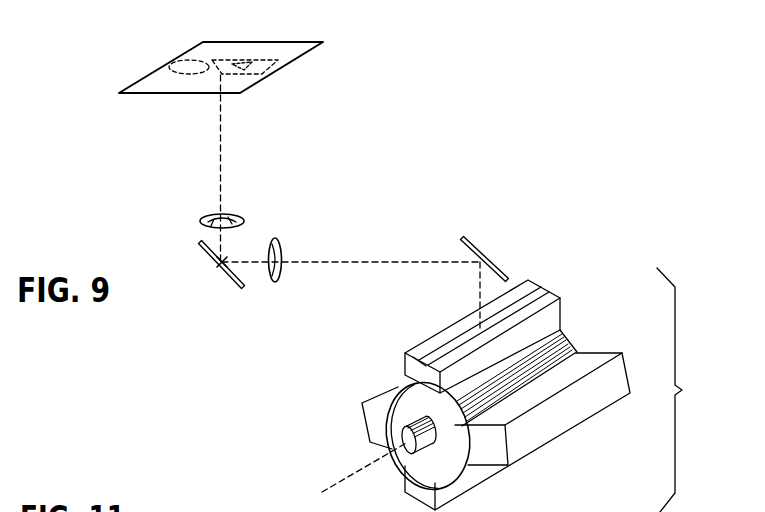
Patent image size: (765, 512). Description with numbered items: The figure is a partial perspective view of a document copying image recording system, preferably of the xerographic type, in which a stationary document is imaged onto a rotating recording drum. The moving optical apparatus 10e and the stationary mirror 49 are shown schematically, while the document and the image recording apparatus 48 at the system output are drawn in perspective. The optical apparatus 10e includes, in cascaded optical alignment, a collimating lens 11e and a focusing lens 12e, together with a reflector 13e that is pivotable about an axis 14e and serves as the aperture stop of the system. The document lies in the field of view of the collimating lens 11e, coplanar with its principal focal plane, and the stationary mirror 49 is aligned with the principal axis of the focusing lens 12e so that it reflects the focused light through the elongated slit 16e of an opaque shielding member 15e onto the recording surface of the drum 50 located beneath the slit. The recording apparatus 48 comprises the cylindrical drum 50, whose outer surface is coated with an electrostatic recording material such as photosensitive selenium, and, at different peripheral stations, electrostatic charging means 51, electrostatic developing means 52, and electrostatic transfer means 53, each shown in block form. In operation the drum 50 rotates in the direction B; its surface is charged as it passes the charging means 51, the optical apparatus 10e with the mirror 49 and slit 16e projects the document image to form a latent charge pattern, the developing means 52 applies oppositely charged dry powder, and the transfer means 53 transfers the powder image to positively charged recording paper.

The moving optical apparatus 10e is at (319, 155).
The collimating lens 11e is at (227, 217).
The focusing lens 12e is at (282, 253).
The reflector 13e is at (205, 251).
The axis 14e is at (226, 260).
The direction of drum rotation B is at (227, 293).
The stationary mirror 49 is at (496, 268).
The opaque shielding member 15e is at (556, 315).
The elongated slit 16e is at (541, 289).
The recording drum 50 is at (568, 345).
The electrostatic charging means 51 is at (603, 403).
The electrostatic developing means 52 is at (363, 405).
The electrostatic transfer means 53 is at (474, 484).
The image recording apparatus 48 is at (710, 404).